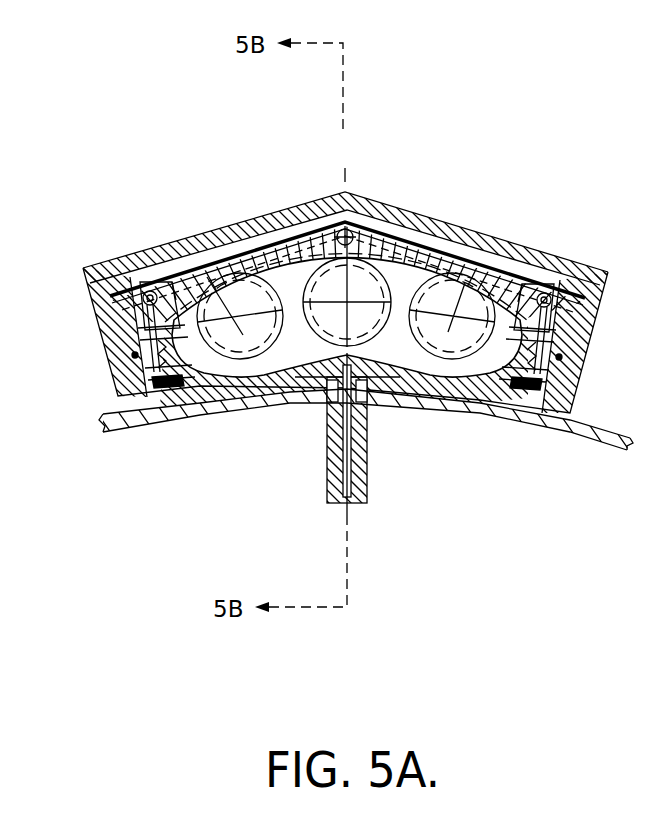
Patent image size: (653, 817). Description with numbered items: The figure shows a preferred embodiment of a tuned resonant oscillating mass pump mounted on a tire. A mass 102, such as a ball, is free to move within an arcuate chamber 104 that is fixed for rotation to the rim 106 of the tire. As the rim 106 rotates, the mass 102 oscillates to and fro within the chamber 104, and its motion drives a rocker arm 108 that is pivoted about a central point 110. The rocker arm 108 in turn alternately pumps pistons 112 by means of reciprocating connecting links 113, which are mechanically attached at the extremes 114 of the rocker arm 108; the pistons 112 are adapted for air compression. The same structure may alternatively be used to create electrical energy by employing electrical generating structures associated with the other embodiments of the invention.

The mass 102 is at (396, 247).
The arcuate chamber 104 is at (458, 240).
The rim 106 is at (483, 418).
The rocker arm 108 is at (287, 243).
The pivot point 110 is at (343, 193).
The pistons 112 is at (135, 355).
The connecting links 113 is at (137, 328).
The extremes of rocker arm 114 is at (135, 280).